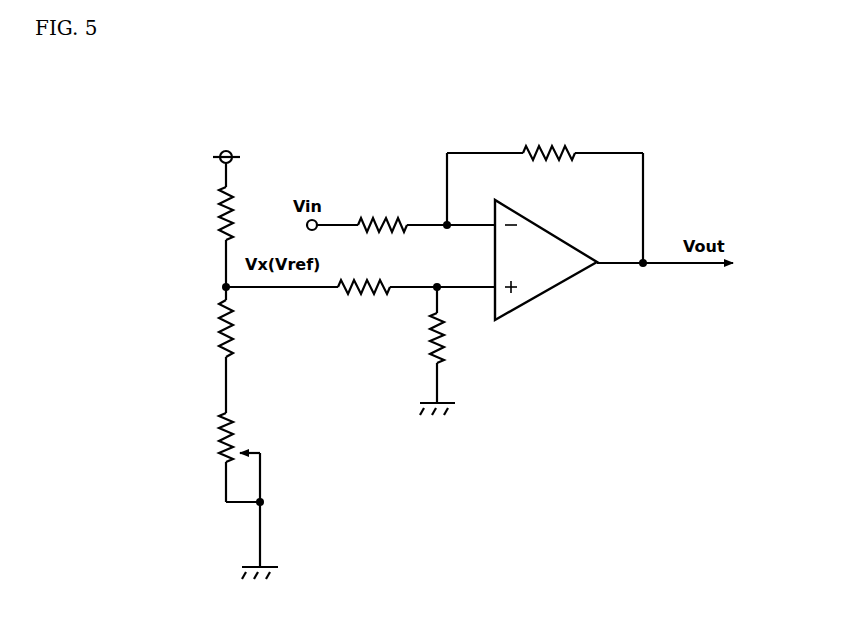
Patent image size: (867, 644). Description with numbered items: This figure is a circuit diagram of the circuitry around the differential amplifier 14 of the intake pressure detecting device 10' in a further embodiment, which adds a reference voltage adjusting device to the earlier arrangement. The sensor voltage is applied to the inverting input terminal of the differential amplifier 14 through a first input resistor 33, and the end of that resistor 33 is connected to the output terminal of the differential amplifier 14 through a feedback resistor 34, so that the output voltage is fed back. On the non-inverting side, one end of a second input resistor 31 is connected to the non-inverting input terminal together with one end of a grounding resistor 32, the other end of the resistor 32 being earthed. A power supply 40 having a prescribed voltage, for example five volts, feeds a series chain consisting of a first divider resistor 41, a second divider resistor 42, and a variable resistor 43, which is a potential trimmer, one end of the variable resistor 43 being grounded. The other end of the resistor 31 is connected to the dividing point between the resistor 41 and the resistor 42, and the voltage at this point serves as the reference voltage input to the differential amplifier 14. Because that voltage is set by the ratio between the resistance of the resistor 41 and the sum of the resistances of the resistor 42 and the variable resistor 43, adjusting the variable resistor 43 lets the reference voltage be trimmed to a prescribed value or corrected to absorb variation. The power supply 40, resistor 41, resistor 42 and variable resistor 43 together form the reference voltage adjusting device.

The power supply 40 is at (250, 140).
The resistor 41 is at (211, 223).
The resistor 42 is at (211, 344).
The variable resistor 43 is at (211, 452).
The resistor 33 is at (402, 214).
The resistor 34 is at (576, 145).
The resistor 31 is at (363, 300).
The resistor 32 is at (456, 346).
The differential amplifier 14 is at (553, 294).
The intake pressure detecting device 10' is at (450, 345).